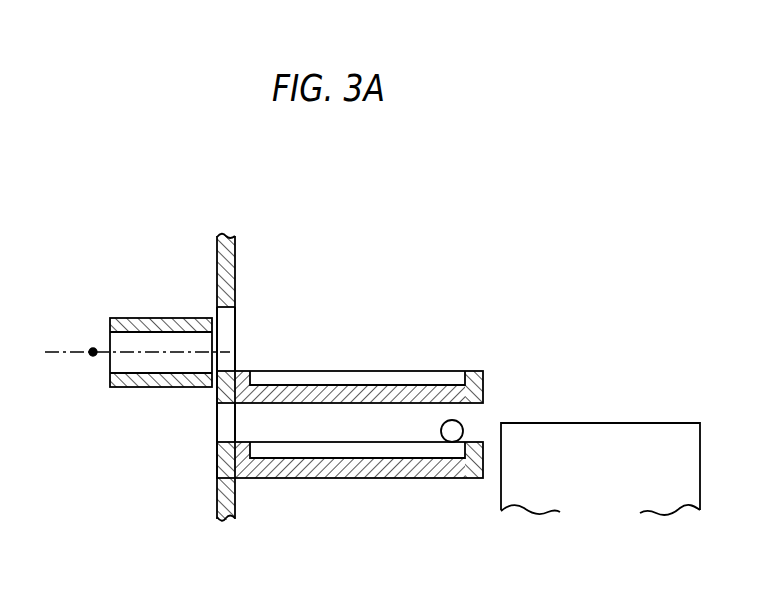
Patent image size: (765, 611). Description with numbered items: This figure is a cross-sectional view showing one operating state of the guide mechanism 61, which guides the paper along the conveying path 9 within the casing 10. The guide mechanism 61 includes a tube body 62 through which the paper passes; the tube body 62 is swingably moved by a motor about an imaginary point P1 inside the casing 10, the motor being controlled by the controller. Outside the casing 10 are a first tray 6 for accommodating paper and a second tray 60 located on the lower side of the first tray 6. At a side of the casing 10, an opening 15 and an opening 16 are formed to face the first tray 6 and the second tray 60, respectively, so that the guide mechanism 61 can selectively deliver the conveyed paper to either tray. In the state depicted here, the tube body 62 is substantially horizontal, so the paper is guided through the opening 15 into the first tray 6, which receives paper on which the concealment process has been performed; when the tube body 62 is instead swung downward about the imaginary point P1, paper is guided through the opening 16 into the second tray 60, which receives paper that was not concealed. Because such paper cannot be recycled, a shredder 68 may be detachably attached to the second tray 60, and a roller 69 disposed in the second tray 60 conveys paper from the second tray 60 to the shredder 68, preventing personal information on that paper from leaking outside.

The imaginary point P1 is at (93, 350).
The conveying path 9 is at (65, 356).
The guide mechanism 61 is at (118, 264).
The tube body 62 is at (158, 318).
The casing 10 is at (235, 274).
The opening 15 is at (235, 312).
The opening 16 is at (222, 408).
The first tray 6 is at (484, 386).
The second tray 60 is at (434, 478).
The roller 69 is at (463, 425).
The shredder 68 is at (630, 422).